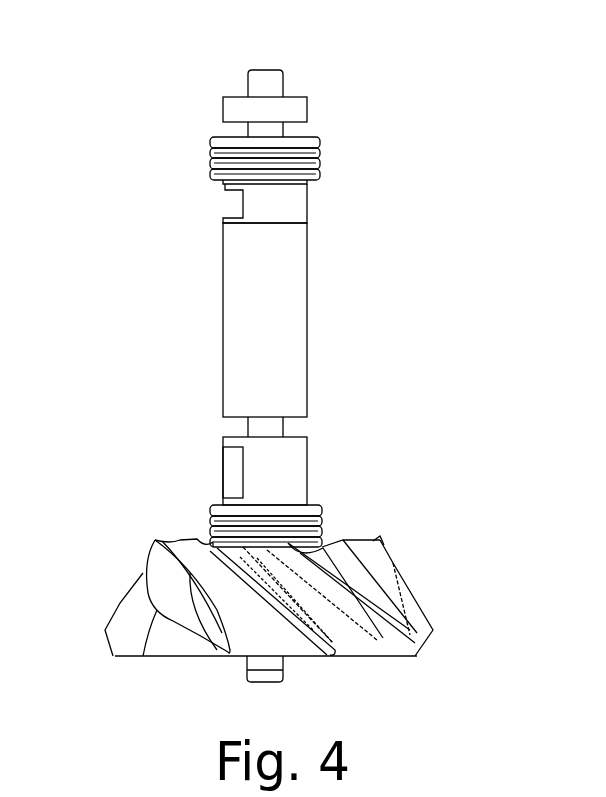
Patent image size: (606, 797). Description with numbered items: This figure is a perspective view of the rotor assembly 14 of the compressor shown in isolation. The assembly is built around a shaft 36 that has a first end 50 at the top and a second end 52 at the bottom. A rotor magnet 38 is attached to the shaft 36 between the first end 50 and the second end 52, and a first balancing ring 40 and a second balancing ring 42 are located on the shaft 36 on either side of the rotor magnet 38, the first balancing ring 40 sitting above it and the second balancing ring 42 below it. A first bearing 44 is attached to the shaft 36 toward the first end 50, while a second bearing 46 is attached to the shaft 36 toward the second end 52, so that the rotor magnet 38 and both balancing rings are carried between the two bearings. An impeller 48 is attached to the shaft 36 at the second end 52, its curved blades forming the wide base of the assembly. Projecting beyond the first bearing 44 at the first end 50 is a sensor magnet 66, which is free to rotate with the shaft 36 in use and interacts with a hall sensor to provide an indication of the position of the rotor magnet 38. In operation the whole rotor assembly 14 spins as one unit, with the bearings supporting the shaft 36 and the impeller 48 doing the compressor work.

The rotor assembly 14 is at (130, 175).
The first end 50 is at (290, 63).
The sensor magnet 66 is at (283, 113).
The first bearing 44 is at (320, 163).
The first balancing ring 40 is at (292, 208).
The rotor magnet 38 is at (242, 337).
The shaft 36 is at (272, 422).
The second balancing ring 42 is at (242, 470).
The second bearing 46 is at (320, 516).
The impeller 48 is at (382, 598).
The second end 52 is at (285, 692).